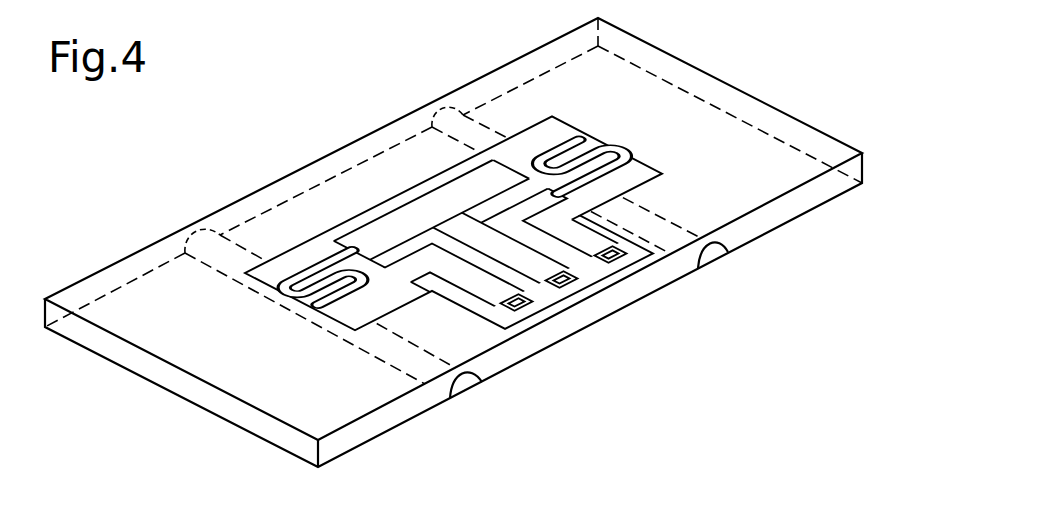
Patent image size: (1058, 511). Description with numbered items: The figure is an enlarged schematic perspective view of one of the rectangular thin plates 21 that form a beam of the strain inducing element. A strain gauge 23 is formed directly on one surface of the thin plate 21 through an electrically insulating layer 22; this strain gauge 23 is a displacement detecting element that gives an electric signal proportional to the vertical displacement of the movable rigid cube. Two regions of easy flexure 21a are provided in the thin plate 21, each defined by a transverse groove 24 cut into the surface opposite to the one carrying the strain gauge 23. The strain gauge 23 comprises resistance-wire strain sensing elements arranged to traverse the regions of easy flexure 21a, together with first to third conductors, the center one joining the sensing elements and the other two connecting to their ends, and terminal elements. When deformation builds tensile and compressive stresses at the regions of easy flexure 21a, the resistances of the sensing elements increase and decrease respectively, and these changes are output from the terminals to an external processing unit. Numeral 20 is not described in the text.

The heater device 20 is at (283, 178).
The thin plate 21 is at (712, 88).
The region of easy flexure 21a is at (248, 243).
The electrically insulating layer 22 is at (370, 213).
The strain gauge 23 is at (492, 205).
The transverse groove 24 is at (460, 385).